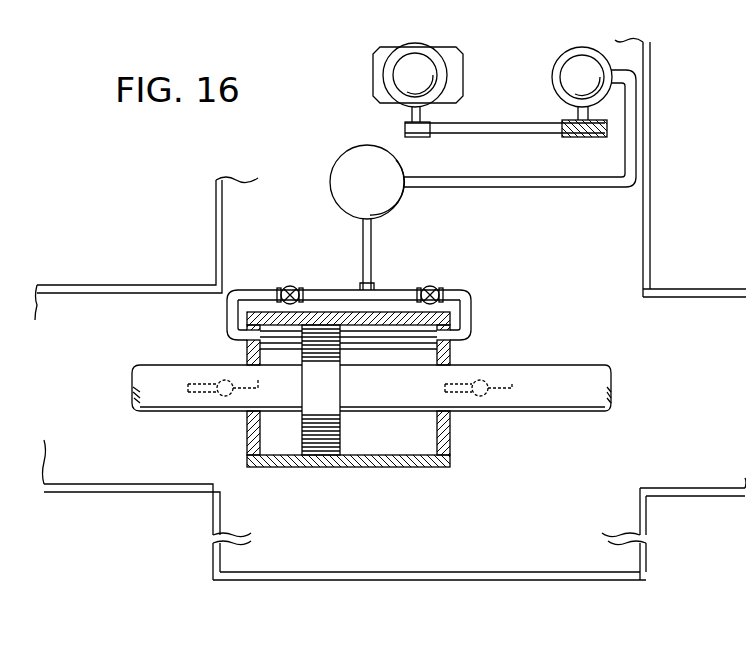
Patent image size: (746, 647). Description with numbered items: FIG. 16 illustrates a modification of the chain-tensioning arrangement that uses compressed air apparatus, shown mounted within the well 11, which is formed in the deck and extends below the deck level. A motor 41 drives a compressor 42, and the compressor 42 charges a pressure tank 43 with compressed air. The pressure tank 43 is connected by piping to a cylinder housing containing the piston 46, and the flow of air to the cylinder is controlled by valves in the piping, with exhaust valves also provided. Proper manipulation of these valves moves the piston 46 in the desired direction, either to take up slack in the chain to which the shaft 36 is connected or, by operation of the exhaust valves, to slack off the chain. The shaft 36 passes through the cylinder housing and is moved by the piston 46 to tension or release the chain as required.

The well 11 is at (432, 517).
The shaft 36 is at (547, 382).
The motor 41 is at (410, 62).
The compressor 42 is at (585, 62).
The pressure tank 43 is at (332, 186).
The piston 46 is at (321, 467).